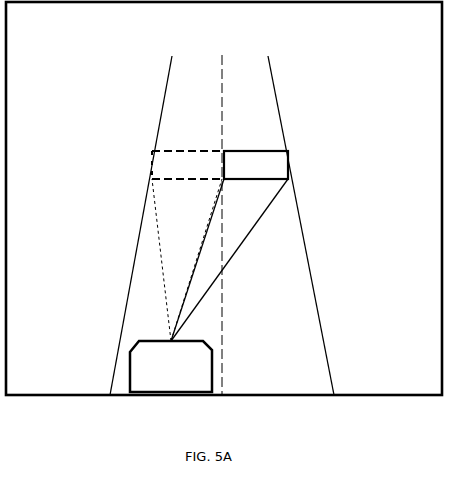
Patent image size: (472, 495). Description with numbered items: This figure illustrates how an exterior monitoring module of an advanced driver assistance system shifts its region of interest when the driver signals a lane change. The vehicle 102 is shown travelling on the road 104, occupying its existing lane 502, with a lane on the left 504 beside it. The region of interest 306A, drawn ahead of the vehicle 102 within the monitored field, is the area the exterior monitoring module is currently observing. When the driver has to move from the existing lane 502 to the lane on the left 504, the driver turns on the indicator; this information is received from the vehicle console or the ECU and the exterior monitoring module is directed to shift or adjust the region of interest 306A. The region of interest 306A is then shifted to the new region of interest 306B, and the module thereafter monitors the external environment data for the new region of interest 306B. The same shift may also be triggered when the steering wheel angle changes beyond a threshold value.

The vehicle 102 is at (212, 363).
The road 104 is at (143, 213).
The region of interest 306A is at (149, 163).
The new region of interest 306B is at (290, 163).
The existing lane 502 is at (150, 268).
The lane on the left 504 is at (287, 248).